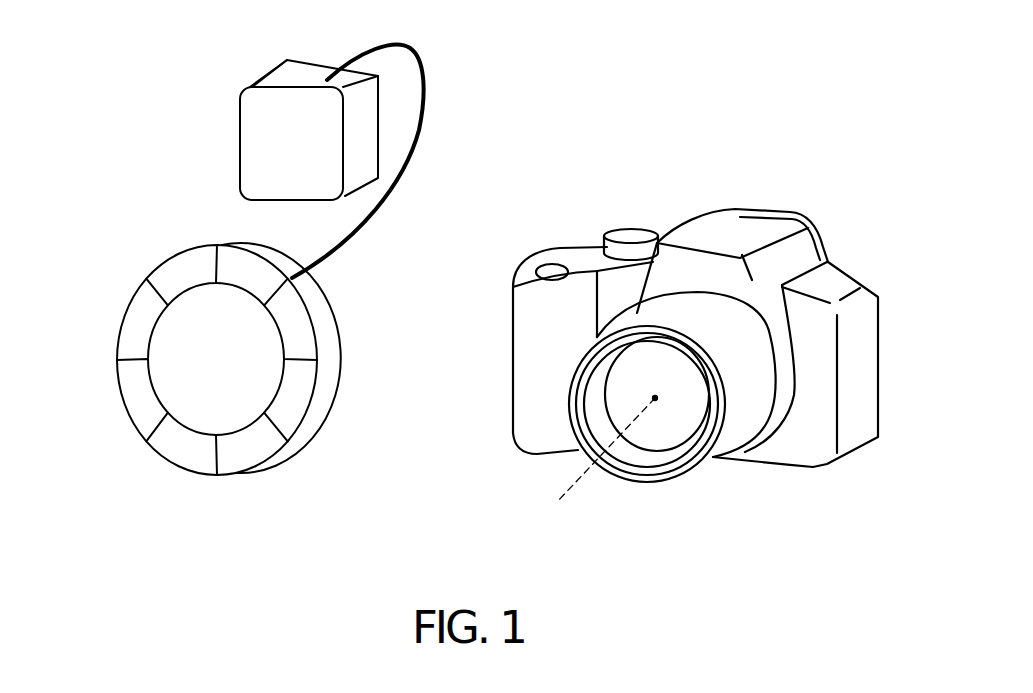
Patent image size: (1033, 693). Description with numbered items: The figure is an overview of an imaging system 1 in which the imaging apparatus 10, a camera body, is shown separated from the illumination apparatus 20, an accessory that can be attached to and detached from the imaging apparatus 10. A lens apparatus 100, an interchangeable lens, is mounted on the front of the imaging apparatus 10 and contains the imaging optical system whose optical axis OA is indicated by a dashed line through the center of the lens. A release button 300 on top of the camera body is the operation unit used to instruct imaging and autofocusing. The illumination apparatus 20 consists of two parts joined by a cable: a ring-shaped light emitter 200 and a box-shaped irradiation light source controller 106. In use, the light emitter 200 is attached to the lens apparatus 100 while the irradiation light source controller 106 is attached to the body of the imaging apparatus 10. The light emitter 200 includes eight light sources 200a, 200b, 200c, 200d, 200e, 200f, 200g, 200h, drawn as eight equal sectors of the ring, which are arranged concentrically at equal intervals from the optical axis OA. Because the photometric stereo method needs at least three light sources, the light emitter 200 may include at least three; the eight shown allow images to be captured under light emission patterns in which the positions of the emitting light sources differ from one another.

The imaging system 1 is at (845, 62).
The imaging apparatus 10 is at (862, 235).
The illumination apparatus 20 is at (155, 163).
The lens apparatus 100 is at (730, 433).
The irradiation light source controller 106 is at (247, 127).
The light emitter 200 is at (168, 270).
The light source 200a is at (268, 277).
The light source 200b is at (293, 327).
The light source 200c is at (295, 397).
The light source 200d is at (252, 453).
The light source 200e is at (192, 452).
The light source 200f is at (147, 410).
The light source 200g is at (137, 333).
The light source 200h is at (205, 264).
The release button 300 is at (549, 262).
The optical axis OA is at (571, 482).